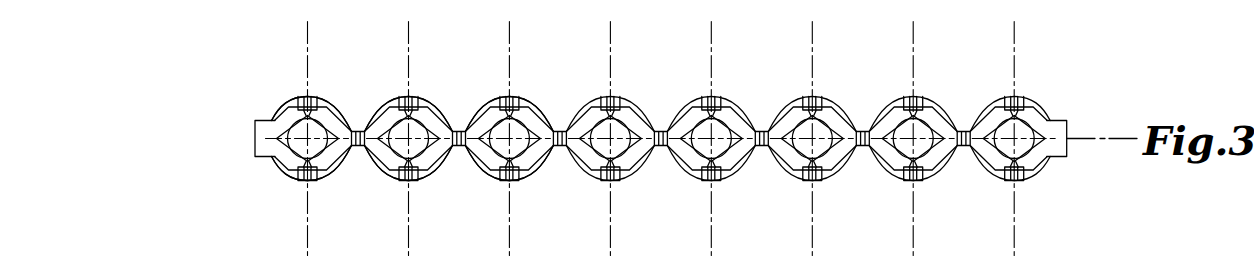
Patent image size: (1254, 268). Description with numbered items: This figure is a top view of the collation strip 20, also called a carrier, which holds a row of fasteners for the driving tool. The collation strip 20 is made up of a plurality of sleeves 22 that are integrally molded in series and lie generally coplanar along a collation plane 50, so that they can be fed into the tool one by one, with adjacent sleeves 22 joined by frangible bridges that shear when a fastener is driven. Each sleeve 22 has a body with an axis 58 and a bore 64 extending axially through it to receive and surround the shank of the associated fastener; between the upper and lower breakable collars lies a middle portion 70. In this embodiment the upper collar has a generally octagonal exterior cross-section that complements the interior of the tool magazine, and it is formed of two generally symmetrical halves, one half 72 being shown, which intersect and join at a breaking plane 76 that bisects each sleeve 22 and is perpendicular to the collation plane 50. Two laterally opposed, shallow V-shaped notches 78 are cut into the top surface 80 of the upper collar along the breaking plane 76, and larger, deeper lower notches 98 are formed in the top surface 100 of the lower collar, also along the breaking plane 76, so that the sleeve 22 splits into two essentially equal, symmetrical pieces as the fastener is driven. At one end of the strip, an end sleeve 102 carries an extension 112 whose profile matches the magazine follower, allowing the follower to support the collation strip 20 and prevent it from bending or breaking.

The collation strip 20 is at (667, 137).
The sleeve 22 is at (413, 97).
The collation plane 50 is at (1095, 137).
The axis 58 is at (681, 117).
The bore 64 is at (664, 107).
The middle portion 70 is at (644, 119).
The half 72 is at (677, 100).
The breaking plane 76 is at (661, 136).
The notch 78 is at (661, 139).
The top surface 80 is at (677, 187).
The lower notch 98 is at (666, 214).
The top surface 100 is at (656, 205).
The end sleeve 102 is at (675, 165).
The extension 112 is at (667, 159).